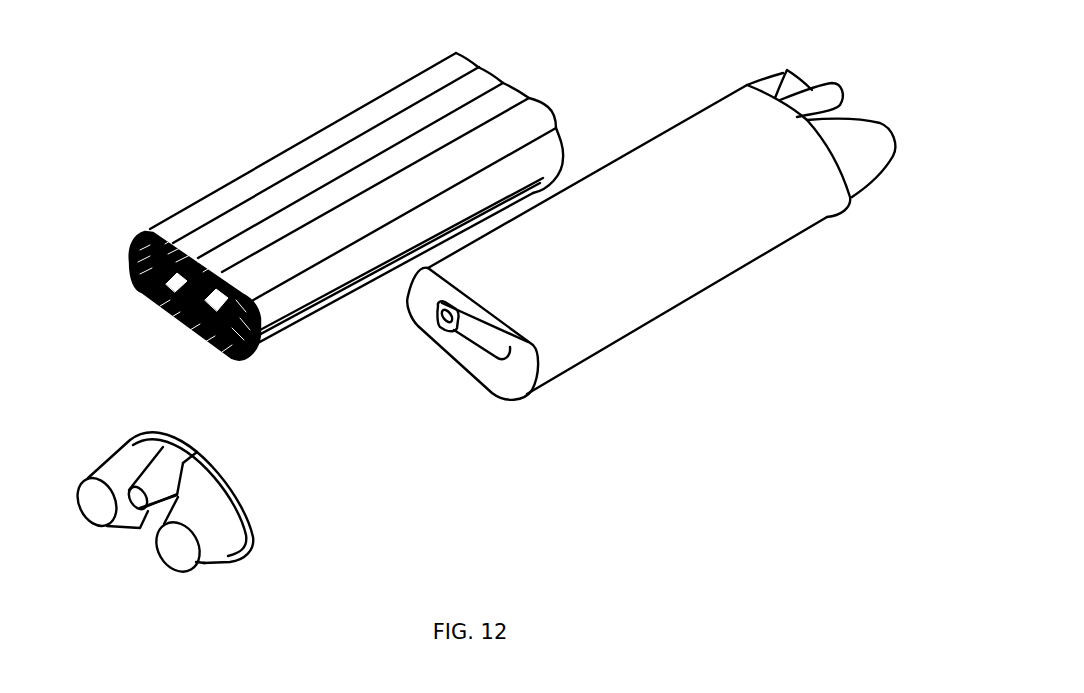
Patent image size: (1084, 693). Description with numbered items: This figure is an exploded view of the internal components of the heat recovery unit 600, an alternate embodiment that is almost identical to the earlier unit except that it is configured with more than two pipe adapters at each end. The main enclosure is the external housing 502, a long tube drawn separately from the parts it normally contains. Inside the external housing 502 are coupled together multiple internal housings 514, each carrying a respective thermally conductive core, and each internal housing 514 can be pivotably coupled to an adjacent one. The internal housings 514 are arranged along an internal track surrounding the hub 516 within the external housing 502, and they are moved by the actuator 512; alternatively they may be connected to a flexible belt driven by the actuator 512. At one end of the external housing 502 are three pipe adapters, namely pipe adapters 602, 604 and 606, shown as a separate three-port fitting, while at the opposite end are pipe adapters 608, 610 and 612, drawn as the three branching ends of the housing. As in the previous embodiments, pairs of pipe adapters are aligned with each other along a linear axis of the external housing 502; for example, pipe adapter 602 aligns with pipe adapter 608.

The heat recovery unit 600 is at (230, 56).
The internal housing 514 is at (227, 200).
The external housing 502 is at (634, 142).
The hub 516 is at (489, 318).
The actuator 512 is at (455, 343).
The pipe adapter 608 is at (785, 82).
The pipe adapter 612 is at (834, 100).
The pipe adapter 610 is at (883, 141).
The pipe adapter 602 is at (112, 459).
The pipe adapter 606 is at (162, 527).
The pipe adapter 604 is at (220, 546).